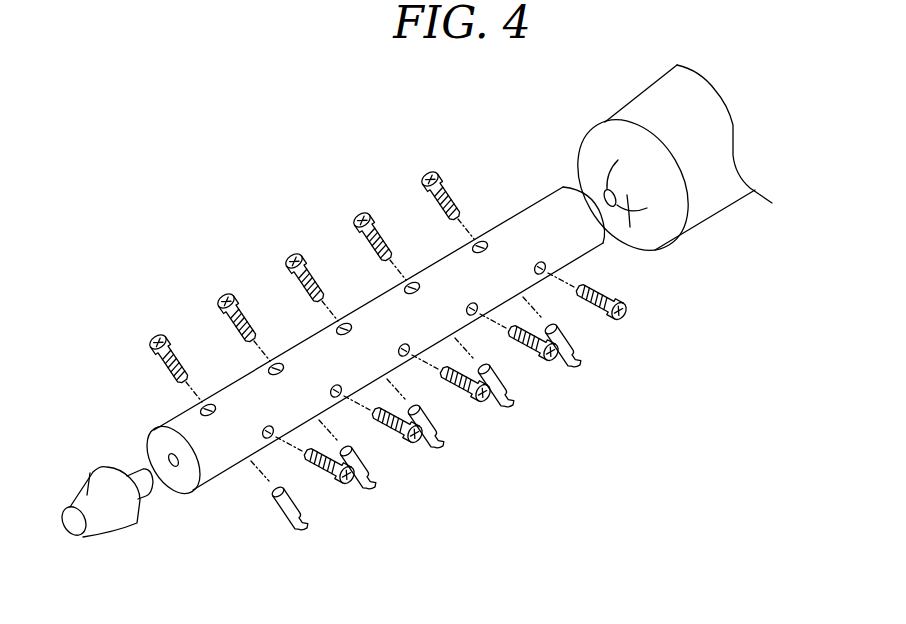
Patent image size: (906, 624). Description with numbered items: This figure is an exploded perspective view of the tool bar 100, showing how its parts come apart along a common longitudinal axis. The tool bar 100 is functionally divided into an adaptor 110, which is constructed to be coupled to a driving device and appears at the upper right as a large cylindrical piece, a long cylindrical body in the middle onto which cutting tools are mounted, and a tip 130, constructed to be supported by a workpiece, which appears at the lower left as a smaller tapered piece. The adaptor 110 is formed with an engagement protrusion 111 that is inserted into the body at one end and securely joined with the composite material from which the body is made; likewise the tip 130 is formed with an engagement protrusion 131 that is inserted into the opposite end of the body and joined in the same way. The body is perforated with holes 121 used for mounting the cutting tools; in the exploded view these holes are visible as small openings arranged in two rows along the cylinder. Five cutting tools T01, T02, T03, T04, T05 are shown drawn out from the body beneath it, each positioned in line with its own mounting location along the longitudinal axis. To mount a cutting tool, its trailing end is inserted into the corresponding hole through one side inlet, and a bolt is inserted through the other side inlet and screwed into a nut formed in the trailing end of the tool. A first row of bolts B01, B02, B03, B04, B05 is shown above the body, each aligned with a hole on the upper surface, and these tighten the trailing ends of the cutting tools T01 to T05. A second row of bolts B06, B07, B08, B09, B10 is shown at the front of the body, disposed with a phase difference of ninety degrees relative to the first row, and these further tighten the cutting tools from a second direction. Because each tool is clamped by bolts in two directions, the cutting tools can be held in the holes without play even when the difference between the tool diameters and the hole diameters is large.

The tool bar 100 is at (258, 165).
The adaptor 110 is at (733, 203).
The engagement protrusion 111 is at (657, 250).
The hole 121 is at (398, 341).
The tip 130 is at (90, 467).
The engagement protrusion 131 is at (143, 488).
The bolt B01 is at (168, 352).
The bolt B02 is at (237, 311).
The bolt B03 is at (309, 271).
The bolt B04 is at (374, 228).
The bolt B05 is at (444, 185).
The bolt B06 is at (347, 486).
The bolt B07 is at (417, 445).
The bolt B08 is at (485, 403).
The bolt B09 is at (553, 361).
The bolt B10 is at (623, 321).
The cutting tool T01 is at (286, 511).
The cutting tool T02 is at (367, 465).
The cutting tool T03 is at (438, 422).
The cutting tool T04 is at (506, 383).
The cutting tool T05 is at (577, 339).